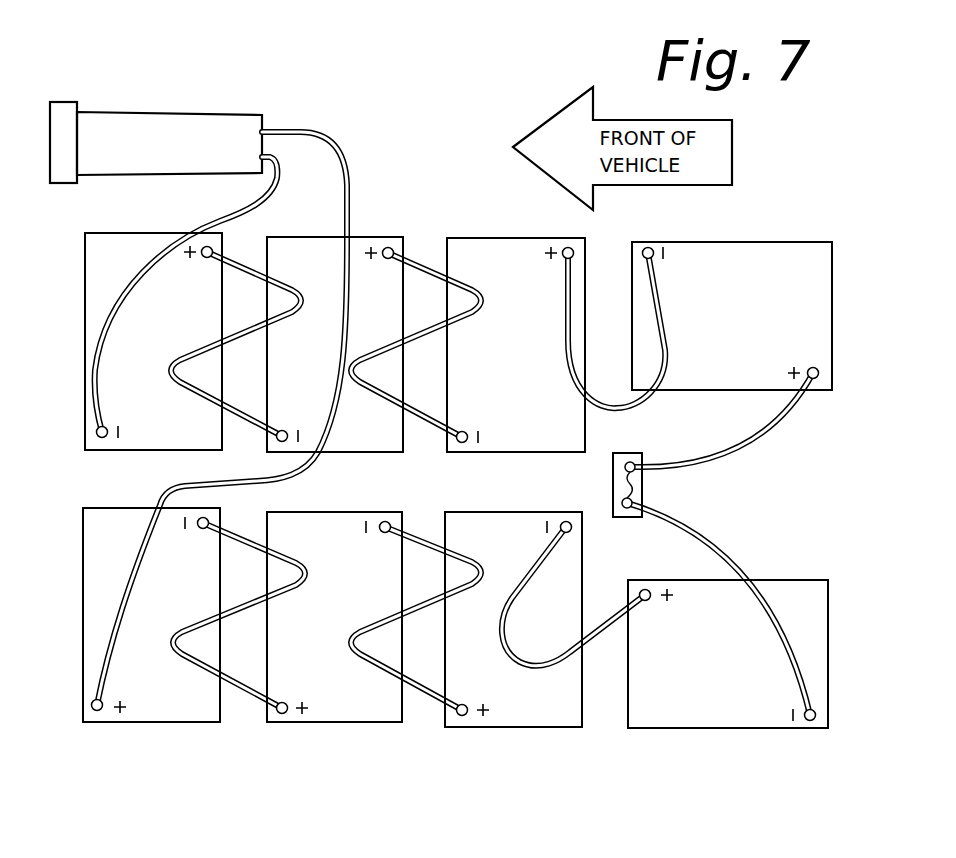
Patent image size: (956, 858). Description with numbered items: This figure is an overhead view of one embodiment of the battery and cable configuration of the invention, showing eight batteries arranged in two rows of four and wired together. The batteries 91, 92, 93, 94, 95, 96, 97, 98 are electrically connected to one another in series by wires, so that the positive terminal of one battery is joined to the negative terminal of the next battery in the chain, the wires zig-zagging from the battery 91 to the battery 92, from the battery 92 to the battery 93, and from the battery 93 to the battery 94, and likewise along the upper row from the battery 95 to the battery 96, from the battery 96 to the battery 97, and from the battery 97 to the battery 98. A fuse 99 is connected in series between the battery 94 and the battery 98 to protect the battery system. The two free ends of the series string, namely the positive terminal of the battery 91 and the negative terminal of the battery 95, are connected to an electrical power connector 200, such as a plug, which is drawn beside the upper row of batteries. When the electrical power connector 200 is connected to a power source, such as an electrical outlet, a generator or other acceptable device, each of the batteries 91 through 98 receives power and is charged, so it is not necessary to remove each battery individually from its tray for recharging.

The electrical power connector 200 is at (178, 112).
The battery 91 is at (184, 596).
The battery 92 is at (376, 602).
The battery 93 is at (556, 647).
The battery 94 is at (721, 682).
The battery 95 is at (186, 318).
The battery 96 is at (321, 370).
The battery 97 is at (521, 390).
The battery 98 is at (766, 318).
The fuse 99 is at (643, 458).